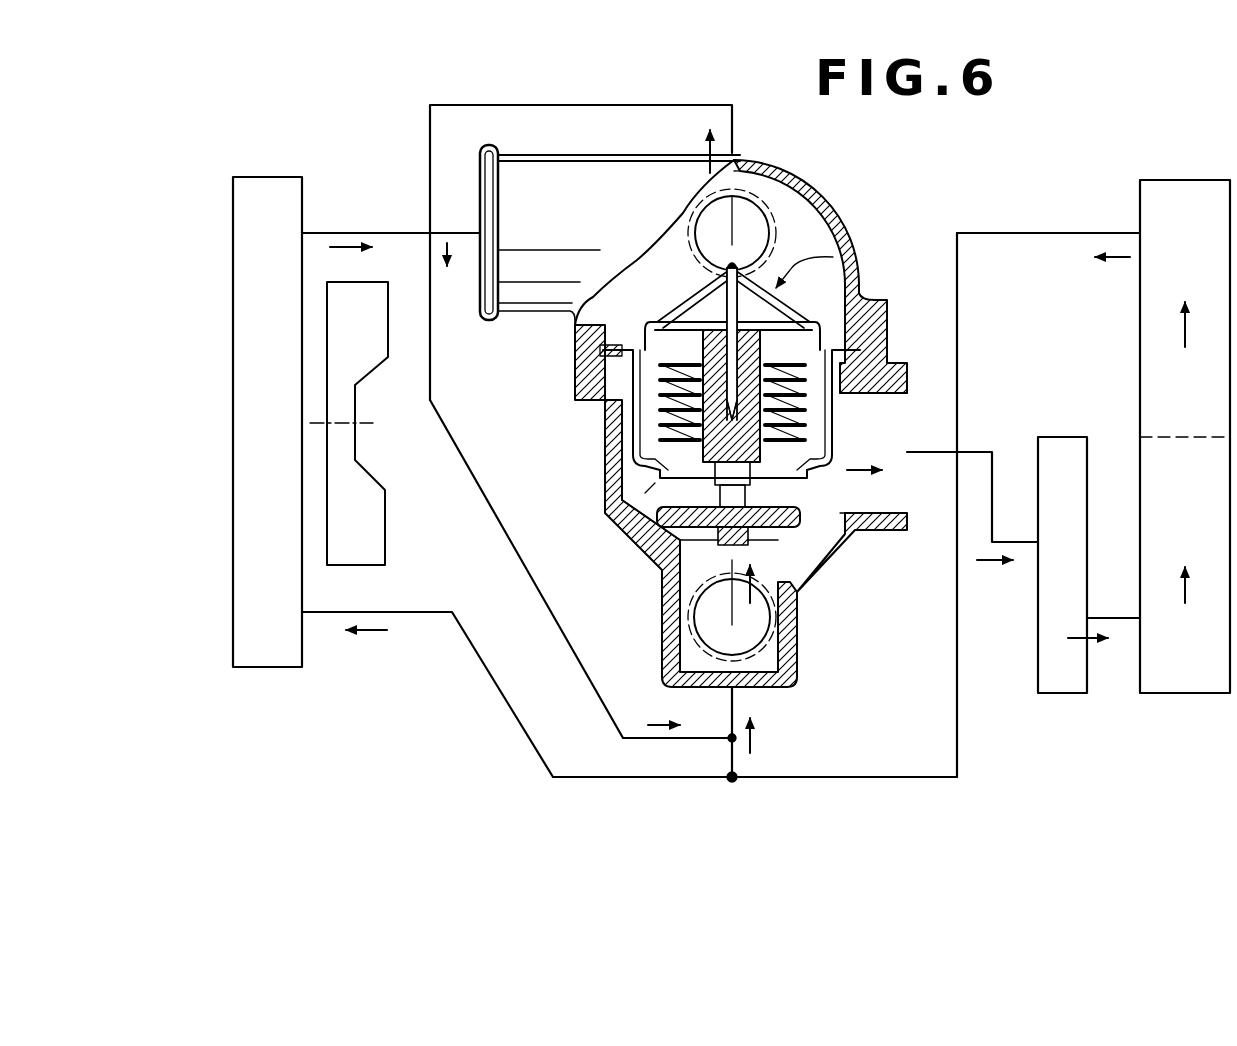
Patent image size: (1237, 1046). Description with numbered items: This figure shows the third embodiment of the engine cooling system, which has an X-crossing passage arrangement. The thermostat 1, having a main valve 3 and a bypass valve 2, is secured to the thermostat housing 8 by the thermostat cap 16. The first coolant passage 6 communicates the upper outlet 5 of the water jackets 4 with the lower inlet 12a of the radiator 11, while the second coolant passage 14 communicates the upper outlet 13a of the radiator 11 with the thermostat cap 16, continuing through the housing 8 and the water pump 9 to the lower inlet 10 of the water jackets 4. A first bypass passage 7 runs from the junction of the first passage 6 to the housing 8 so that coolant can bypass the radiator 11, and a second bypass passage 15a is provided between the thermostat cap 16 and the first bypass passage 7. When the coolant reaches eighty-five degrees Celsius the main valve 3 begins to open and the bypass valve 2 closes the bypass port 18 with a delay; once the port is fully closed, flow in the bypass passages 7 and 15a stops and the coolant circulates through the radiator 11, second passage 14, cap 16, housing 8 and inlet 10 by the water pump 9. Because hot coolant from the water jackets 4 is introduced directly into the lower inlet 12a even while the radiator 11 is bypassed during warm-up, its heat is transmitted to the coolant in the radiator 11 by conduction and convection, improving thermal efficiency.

The thermostat 1 is at (843, 260).
The bypass valve 2 is at (810, 568).
The main valve 3 is at (667, 373).
The water jackets 4 is at (1140, 325).
The upper outlet 5 is at (1140, 235).
The first coolant passage 6 is at (843, 777).
The first bypass passage 7 is at (730, 712).
The thermostat housing 8 is at (605, 480).
The water pump 9 is at (1063, 437).
The lower inlet 10 is at (1135, 620).
The radiator 11 is at (233, 450).
The lower inlet 12a is at (303, 613).
The upper outlet 13a is at (307, 225).
The second coolant passage 14 is at (418, 233).
The second bypass passage 15a is at (475, 480).
The thermostat cap 16 is at (535, 288).
The bypass port 18 is at (677, 570).